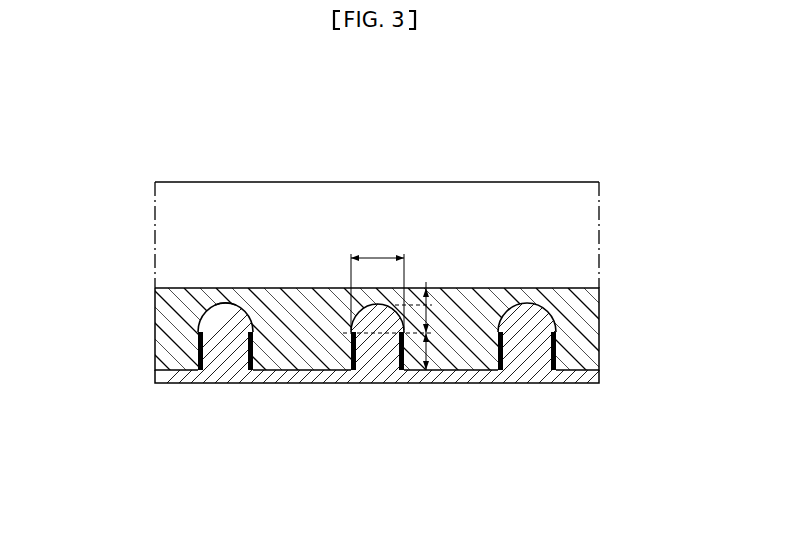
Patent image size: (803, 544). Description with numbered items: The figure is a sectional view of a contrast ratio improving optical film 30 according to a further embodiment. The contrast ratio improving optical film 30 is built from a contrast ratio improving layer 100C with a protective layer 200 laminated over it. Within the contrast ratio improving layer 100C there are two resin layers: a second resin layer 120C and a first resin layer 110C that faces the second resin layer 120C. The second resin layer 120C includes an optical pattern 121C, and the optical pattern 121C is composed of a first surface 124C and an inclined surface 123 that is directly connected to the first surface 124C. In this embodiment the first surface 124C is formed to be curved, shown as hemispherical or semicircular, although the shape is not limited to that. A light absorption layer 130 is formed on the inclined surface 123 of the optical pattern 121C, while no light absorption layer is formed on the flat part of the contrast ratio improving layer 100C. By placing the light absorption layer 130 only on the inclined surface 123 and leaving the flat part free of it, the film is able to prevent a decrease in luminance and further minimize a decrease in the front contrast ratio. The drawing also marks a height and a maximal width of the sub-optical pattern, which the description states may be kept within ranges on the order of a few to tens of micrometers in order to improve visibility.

The contrast ratio improving optical film 30 is at (541, 146).
The protective layer 200 is at (586, 244).
The contrast ratio improving layer 100C is at (608, 290).
The second resin layer 120C is at (163, 337).
The first resin layer 110C is at (156, 377).
The inclined surface 123 is at (203, 352).
The optical pattern 121C is at (210, 318).
The first surface 124C is at (224, 302).
The light absorption layer 130 is at (265, 330).